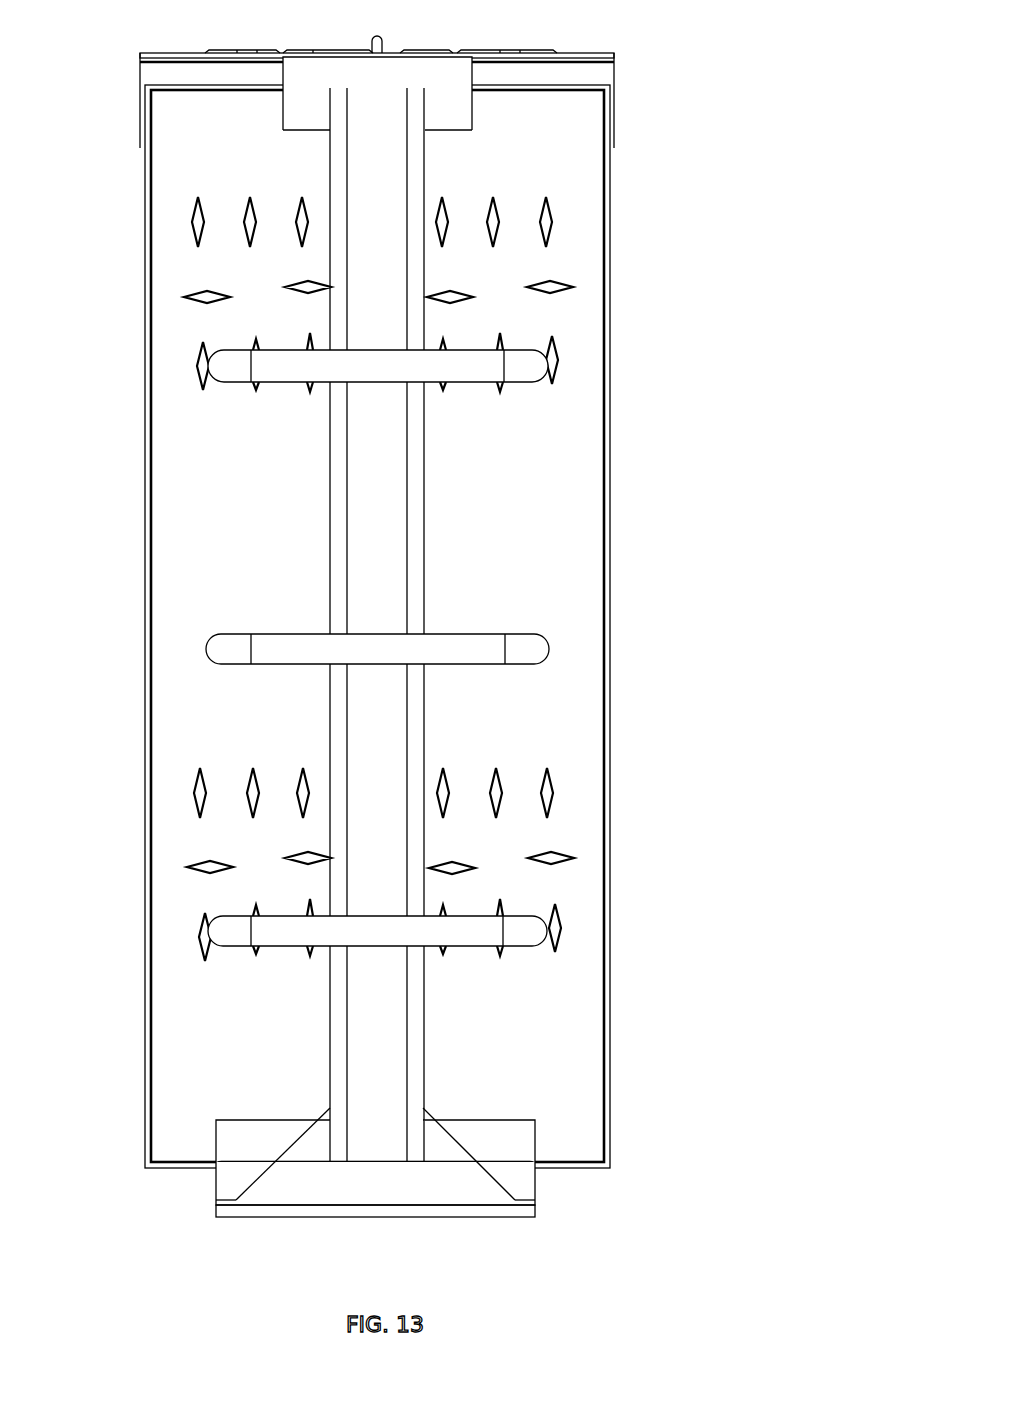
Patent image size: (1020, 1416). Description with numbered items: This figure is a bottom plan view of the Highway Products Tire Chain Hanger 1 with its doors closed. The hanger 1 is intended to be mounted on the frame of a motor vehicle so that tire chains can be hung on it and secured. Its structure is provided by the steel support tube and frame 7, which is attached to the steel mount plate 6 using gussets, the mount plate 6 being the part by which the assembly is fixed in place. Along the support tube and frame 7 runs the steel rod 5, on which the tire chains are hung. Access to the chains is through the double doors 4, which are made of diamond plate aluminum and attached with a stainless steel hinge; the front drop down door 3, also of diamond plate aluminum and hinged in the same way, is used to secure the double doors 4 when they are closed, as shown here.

The Tire Chain Hanger 1 is at (738, 508).
The front drop down door 3 is at (159, 45).
The double doors 4 is at (621, 210).
The steel rod 5 is at (561, 337).
The steel mount plate 6 is at (269, 1228).
The support tube and frame 7 is at (438, 524).